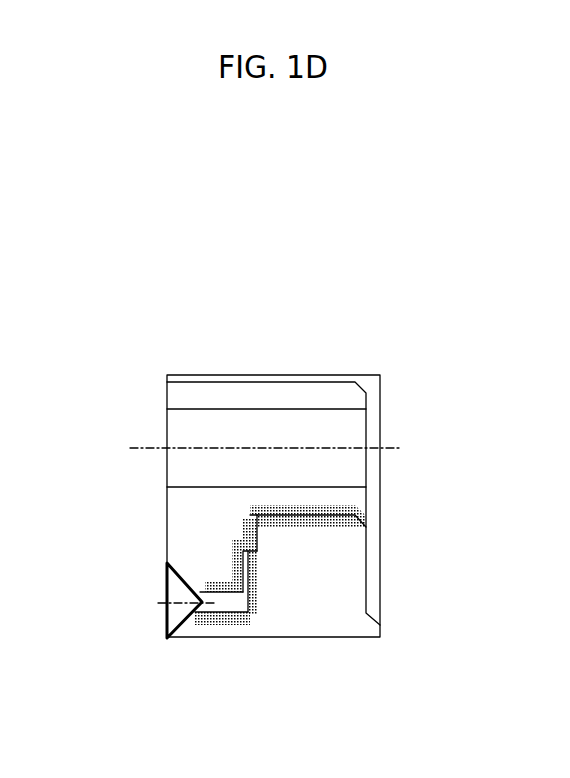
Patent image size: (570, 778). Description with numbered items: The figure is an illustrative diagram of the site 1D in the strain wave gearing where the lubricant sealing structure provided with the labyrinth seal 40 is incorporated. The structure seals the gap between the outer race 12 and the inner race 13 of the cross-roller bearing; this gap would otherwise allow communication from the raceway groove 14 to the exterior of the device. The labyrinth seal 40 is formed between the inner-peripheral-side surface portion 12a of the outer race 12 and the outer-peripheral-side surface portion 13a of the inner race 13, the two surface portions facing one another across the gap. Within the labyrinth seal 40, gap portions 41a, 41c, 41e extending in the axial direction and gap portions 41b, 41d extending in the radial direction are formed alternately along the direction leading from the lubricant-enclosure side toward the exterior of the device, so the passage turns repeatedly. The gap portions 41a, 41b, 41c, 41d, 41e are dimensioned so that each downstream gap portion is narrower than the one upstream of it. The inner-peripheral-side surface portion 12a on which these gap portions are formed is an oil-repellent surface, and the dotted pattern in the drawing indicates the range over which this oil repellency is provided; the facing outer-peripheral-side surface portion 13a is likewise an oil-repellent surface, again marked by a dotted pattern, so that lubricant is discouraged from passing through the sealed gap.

The site 1D is at (328, 373).
The outer race 12 is at (167, 503).
The inner-peripheral-side surface portion 12a is at (253, 515).
The inner race 13 is at (210, 630).
The outer-peripheral-side surface portion 13a is at (312, 508).
The raceway groove 14 is at (175, 592).
The labyrinth seal 40 is at (360, 590).
The gap portion 41a is at (232, 605).
The gap portion 41b is at (248, 575).
The gap portion 41c is at (258, 553).
The gap portion 41d is at (267, 538).
The gap portion 41e is at (267, 523).